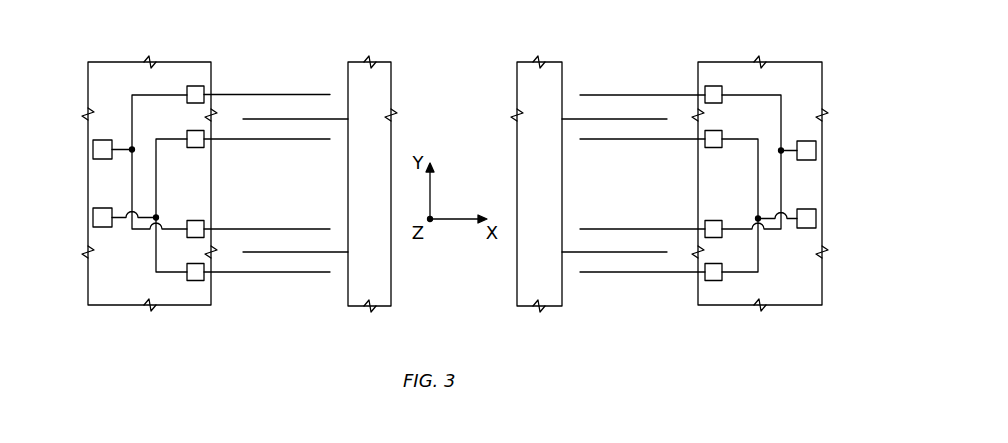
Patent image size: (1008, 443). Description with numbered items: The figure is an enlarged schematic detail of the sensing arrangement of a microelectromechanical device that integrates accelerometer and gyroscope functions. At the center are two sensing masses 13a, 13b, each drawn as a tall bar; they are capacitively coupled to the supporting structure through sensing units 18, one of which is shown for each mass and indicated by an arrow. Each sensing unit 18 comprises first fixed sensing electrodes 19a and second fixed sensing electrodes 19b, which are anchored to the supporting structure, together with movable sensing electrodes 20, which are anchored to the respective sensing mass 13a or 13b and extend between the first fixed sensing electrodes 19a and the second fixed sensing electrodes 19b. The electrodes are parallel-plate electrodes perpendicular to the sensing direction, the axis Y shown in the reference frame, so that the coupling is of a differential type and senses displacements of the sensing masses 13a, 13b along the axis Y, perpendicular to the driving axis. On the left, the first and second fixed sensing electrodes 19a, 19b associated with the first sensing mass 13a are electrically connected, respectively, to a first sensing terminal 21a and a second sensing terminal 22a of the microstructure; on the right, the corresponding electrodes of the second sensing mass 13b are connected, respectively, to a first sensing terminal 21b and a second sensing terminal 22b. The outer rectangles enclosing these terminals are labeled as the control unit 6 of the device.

The control unit 6 is at (137, 310).
The first sensing mass 13a is at (391, 82).
The second sensing mass 13b is at (517, 82).
The sensing unit 18 is at (312, 64).
The first fixed sensing electrodes 19a is at (250, 93).
The second fixed sensing electrodes 19b is at (240, 140).
The movable sensing electrodes 20 is at (333, 120).
The first sensing terminal 21a is at (93, 148).
The first sensing terminal 21b is at (818, 155).
The second sensing terminal 22a is at (93, 219).
The second sensing terminal 22b is at (818, 220).